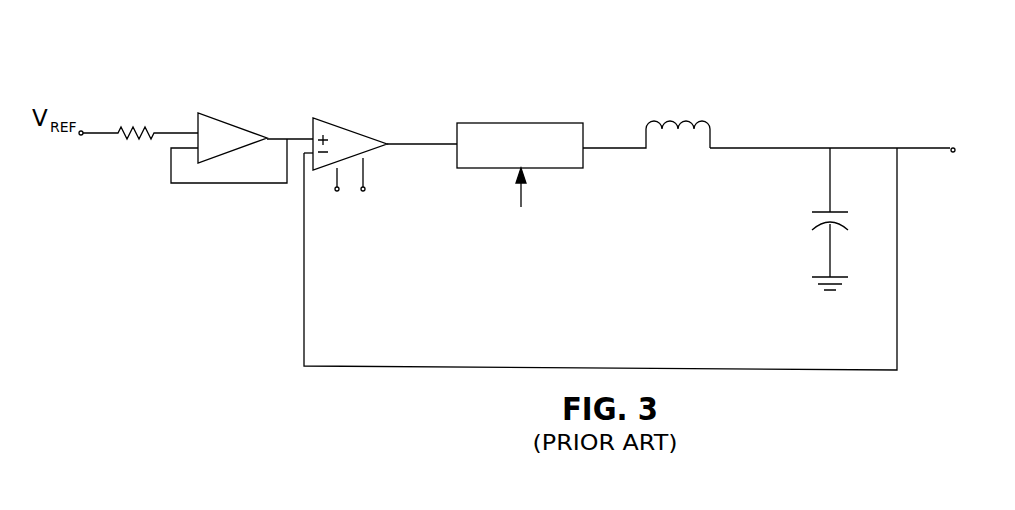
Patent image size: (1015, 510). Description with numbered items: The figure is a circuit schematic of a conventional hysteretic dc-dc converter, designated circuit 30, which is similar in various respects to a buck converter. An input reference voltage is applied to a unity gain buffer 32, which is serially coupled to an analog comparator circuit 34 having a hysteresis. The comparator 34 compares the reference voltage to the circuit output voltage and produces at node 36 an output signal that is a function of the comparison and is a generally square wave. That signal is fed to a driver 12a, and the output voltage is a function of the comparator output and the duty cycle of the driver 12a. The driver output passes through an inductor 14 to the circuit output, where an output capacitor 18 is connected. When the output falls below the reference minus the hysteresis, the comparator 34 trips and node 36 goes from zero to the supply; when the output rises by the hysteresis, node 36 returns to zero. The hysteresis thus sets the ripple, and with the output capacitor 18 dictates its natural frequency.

The hysteretic dc-dc converter circuit 30 is at (895, 92).
The unity gain buffer 32 is at (177, 133).
The analog comparator circuit 34 is at (285, 139).
The node 36 is at (395, 143).
The driver 12a is at (485, 122).
The inductor 14 is at (710, 130).
The output capacitor 18 is at (820, 211).